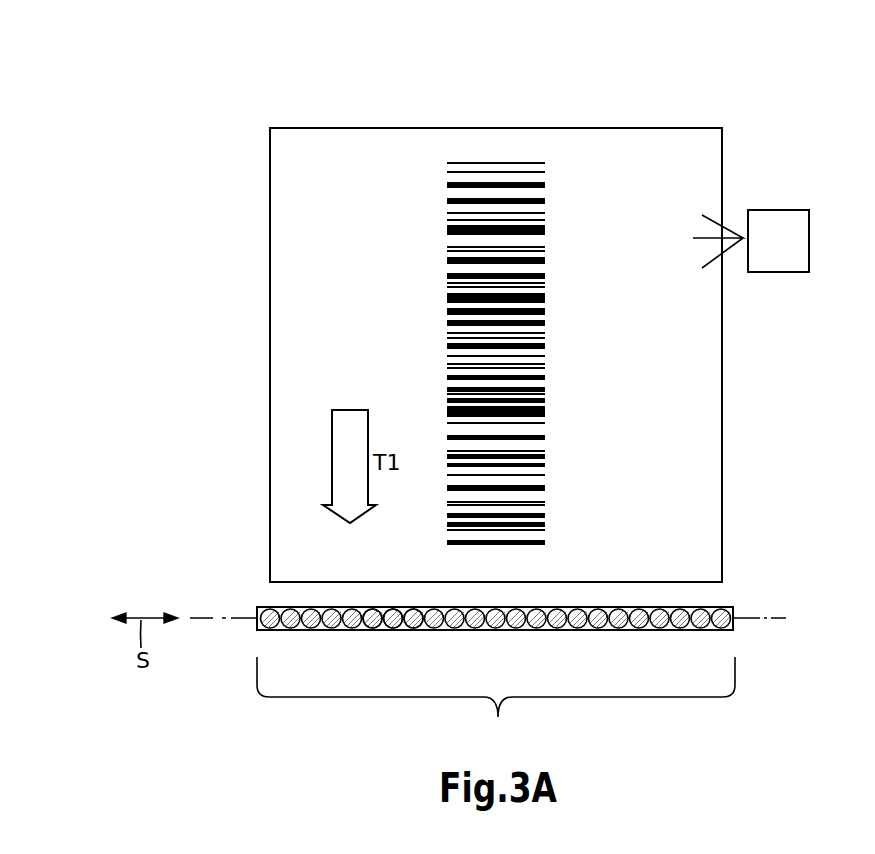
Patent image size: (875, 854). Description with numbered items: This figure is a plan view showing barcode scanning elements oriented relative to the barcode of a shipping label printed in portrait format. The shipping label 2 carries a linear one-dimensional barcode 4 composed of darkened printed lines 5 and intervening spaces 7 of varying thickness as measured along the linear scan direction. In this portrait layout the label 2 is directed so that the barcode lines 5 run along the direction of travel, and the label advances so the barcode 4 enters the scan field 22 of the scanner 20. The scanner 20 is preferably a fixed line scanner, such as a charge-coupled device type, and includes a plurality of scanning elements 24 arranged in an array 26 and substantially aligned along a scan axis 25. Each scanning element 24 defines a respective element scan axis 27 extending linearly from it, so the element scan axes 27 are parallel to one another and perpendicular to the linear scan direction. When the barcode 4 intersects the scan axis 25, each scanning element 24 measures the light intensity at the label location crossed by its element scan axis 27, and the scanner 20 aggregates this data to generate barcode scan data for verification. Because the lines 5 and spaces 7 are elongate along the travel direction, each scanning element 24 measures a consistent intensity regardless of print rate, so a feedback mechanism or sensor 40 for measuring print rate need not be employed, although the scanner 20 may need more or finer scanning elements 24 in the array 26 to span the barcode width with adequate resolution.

The shipping label 2 is at (296, 185).
The barcode 4 is at (546, 179).
The barcode lines 5 is at (542, 204).
The spaces 7 is at (542, 329).
The sensor 40 is at (795, 251).
The scanner 20 is at (257, 628).
The scan field 22 is at (712, 606).
The scanning elements 24 is at (718, 621).
The scan axis 25 is at (213, 615).
The array 26 is at (496, 704).
The element scan axis 27 is at (413, 618).